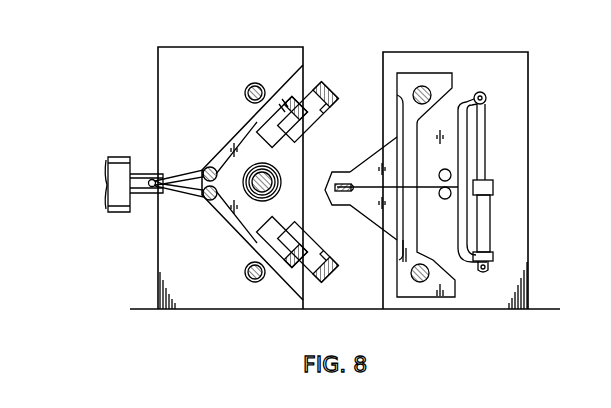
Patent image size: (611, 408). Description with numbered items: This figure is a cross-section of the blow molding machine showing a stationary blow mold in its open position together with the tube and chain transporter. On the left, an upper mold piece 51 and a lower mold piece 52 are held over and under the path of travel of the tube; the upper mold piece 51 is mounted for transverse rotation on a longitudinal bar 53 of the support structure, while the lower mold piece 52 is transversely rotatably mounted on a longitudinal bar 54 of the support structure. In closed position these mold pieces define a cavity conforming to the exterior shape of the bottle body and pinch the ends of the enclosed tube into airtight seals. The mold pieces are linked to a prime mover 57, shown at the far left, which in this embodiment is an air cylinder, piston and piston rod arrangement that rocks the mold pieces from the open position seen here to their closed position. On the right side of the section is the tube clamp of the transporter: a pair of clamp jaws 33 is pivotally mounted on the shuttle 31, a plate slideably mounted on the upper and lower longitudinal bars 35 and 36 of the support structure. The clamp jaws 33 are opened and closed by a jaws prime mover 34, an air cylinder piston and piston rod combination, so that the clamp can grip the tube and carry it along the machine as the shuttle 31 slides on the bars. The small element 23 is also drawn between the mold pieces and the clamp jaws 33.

The workpiece/pin 23 is at (344, 192).
The shuttle 31 is at (445, 72).
The clamp jaws 33 is at (367, 172).
The jaws prime mover 34 is at (490, 232).
The upper longitudinal bar 35 is at (418, 87).
The lower longitudinal bar 36 is at (421, 284).
The upper mold piece 51 is at (318, 104).
The lower mold piece 52 is at (310, 262).
The longitudinal bar 53 is at (265, 89).
The longitudinal bar 54 is at (257, 282).
The prime mover 57 is at (121, 160).